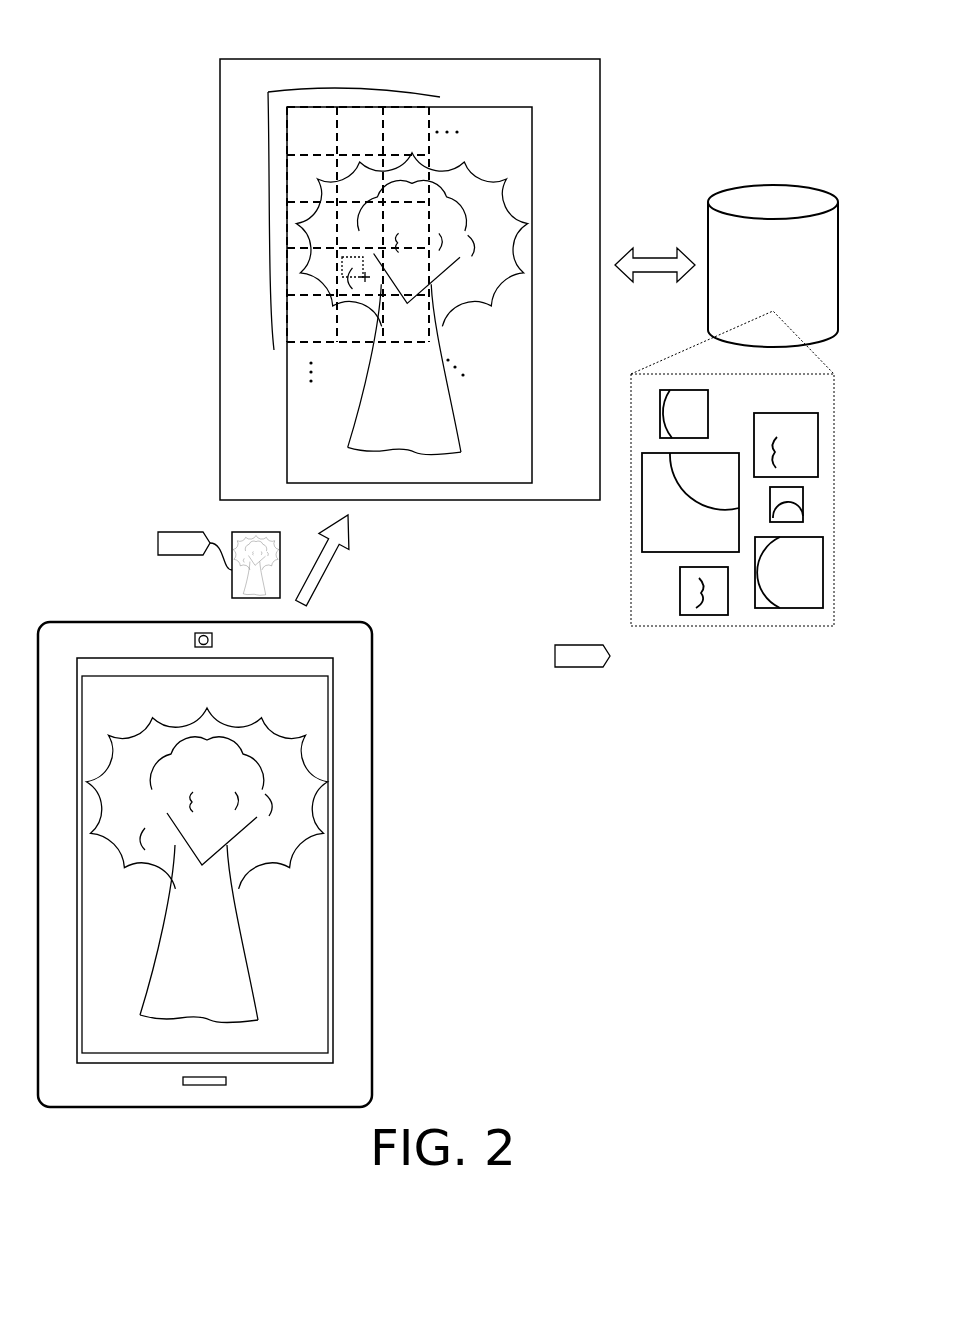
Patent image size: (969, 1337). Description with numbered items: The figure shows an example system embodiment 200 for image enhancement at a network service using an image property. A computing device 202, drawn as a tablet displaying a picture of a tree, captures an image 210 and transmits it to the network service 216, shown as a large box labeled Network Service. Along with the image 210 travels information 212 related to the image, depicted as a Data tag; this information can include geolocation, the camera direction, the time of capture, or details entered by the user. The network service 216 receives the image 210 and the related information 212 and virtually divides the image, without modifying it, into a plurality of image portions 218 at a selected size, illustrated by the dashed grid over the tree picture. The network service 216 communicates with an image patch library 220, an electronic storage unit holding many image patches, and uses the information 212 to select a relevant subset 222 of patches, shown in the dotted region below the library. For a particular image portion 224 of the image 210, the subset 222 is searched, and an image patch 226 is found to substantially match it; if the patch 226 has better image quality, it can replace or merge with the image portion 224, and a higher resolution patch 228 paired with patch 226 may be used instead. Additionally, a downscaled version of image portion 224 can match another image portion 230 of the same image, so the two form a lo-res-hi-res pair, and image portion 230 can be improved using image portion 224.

The example system embodiment 200 is at (66, 102).
The computing device 202 is at (372, 960).
The image 210 is at (287, 410).
The information related to the image 212 is at (160, 543).
The network service 216 is at (220, 108).
The image portions 218 is at (335, 213).
The image patch library 220 is at (708, 220).
The subset of image patches 222 is at (722, 496).
The particular image portion 224 is at (284, 213).
The image patch 226 is at (708, 405).
The higher resolution image patch 228 is at (800, 608).
The image portion 230 is at (366, 282).